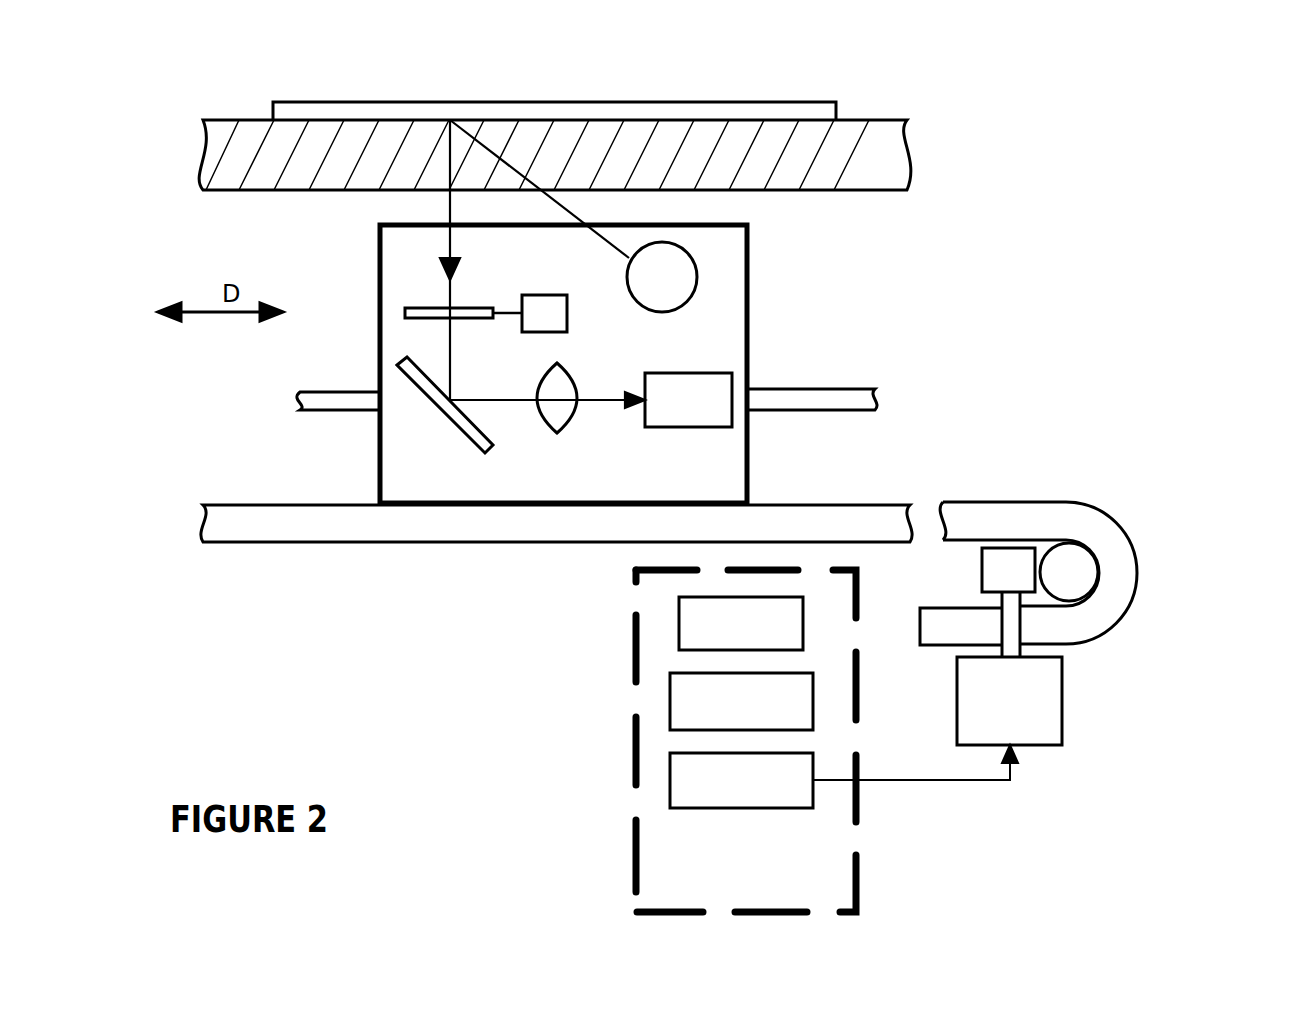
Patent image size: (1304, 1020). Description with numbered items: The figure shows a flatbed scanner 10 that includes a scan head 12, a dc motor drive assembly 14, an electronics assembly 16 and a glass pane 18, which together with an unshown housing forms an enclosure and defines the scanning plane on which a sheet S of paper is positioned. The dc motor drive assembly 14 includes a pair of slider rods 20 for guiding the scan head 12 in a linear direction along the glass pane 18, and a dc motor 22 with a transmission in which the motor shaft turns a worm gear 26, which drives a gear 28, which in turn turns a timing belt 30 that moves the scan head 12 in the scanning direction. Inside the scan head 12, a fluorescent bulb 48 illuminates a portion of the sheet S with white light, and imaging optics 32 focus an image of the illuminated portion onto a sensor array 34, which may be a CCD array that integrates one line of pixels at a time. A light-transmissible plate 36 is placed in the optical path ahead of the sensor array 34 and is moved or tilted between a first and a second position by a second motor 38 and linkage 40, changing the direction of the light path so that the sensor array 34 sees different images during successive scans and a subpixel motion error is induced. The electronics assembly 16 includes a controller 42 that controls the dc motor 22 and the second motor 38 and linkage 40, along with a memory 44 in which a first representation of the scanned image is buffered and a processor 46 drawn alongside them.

The sheet of paper S is at (837, 110).
The flatbed scanner 10 is at (376, 644).
The scan head 12 is at (767, 295).
The dc motor drive assembly 14 is at (1196, 579).
The electronics assembly 16 is at (876, 858).
The glass pane 18 is at (915, 157).
The slider rods 20 is at (856, 389).
The dc motor 22 is at (1064, 712).
The worm gear 26 is at (982, 562).
The gear 28 is at (1075, 584).
The timing belt 30 is at (1122, 529).
The imaging optics 32 is at (550, 432).
The sensor array 34 is at (688, 372).
The light-transmissible plate 36 is at (470, 318).
The second motor 38 is at (512, 306).
The linkage 40 is at (548, 295).
The controller 42 is at (670, 790).
The memory 44 is at (679, 625).
The processor 46 is at (670, 703).
The fluorescent bulb 48 is at (697, 278).